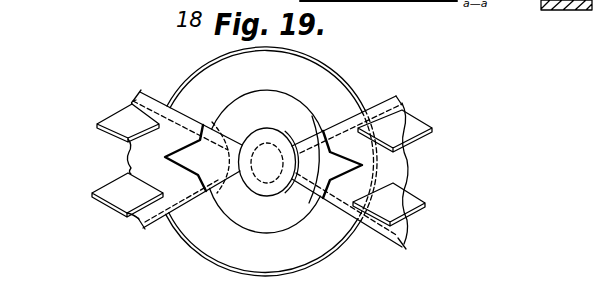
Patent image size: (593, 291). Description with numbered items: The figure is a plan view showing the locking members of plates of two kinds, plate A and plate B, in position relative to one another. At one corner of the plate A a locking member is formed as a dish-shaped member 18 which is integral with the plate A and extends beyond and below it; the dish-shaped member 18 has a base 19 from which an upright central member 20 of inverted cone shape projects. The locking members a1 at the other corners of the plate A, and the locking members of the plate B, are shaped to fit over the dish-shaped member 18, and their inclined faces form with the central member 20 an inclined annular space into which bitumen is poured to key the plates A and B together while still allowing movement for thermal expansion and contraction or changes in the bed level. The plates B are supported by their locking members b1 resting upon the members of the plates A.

The dish-shaped member 18 is at (271, 161).
The base 19 is at (266, 161).
The upright central member 20 is at (452, 168).
The plate A is at (170, 135).
The plate B is at (403, 152).
The locking member a1 is at (255, 140).
The locking member b1 is at (320, 140).